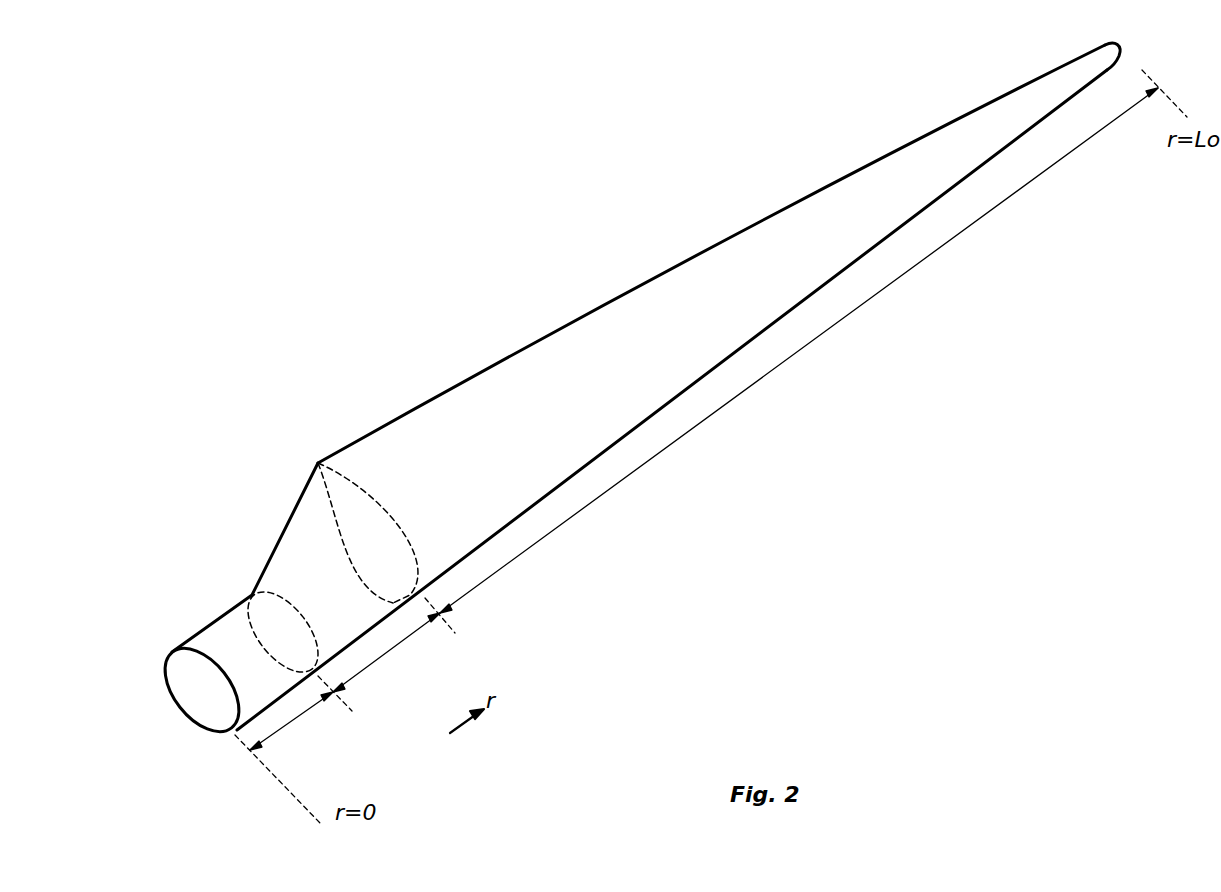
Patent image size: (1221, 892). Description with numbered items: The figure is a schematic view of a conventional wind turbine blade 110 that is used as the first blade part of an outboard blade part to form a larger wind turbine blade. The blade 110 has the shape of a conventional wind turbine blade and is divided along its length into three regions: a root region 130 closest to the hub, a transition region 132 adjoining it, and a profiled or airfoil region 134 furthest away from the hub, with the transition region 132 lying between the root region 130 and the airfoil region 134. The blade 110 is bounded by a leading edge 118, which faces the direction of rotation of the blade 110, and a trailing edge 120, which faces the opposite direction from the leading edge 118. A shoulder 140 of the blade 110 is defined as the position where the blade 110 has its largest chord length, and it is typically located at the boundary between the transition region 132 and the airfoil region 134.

The wind turbine blade 110 is at (635, 394).
The leading edge 118 is at (832, 282).
The trailing edge 120 is at (805, 197).
The root region 130 is at (295, 718).
The transition region 132 is at (392, 652).
The airfoil region 134 is at (727, 407).
The shoulder 140 is at (318, 463).